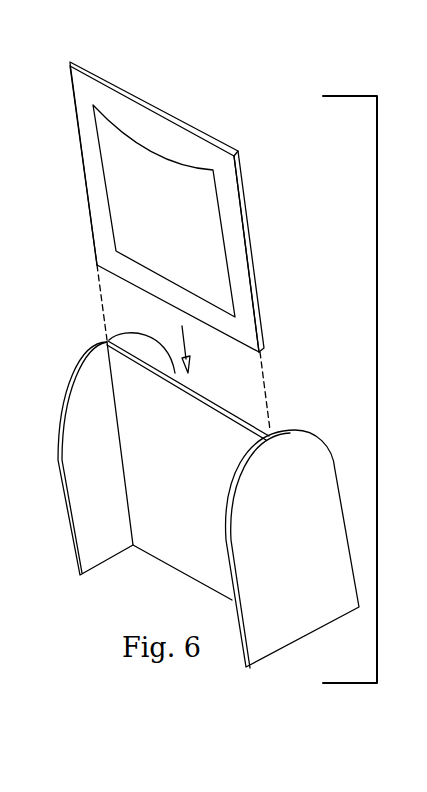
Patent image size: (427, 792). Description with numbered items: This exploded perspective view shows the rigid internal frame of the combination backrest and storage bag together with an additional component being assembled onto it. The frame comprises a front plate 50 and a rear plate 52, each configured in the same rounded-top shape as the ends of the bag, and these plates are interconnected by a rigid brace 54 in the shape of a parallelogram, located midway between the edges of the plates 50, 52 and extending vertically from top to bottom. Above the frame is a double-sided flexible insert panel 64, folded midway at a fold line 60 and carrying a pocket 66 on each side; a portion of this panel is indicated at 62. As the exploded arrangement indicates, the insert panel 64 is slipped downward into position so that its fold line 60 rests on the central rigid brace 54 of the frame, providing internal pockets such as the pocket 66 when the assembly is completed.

The front plate 50 is at (305, 556).
The rear plate 52 is at (110, 485).
The rigid brace 54 is at (196, 498).
The fold line 60 is at (185, 201).
The left frame edge 62 is at (103, 228).
The insert panel 64 is at (258, 270).
The pocket 66 is at (173, 226).